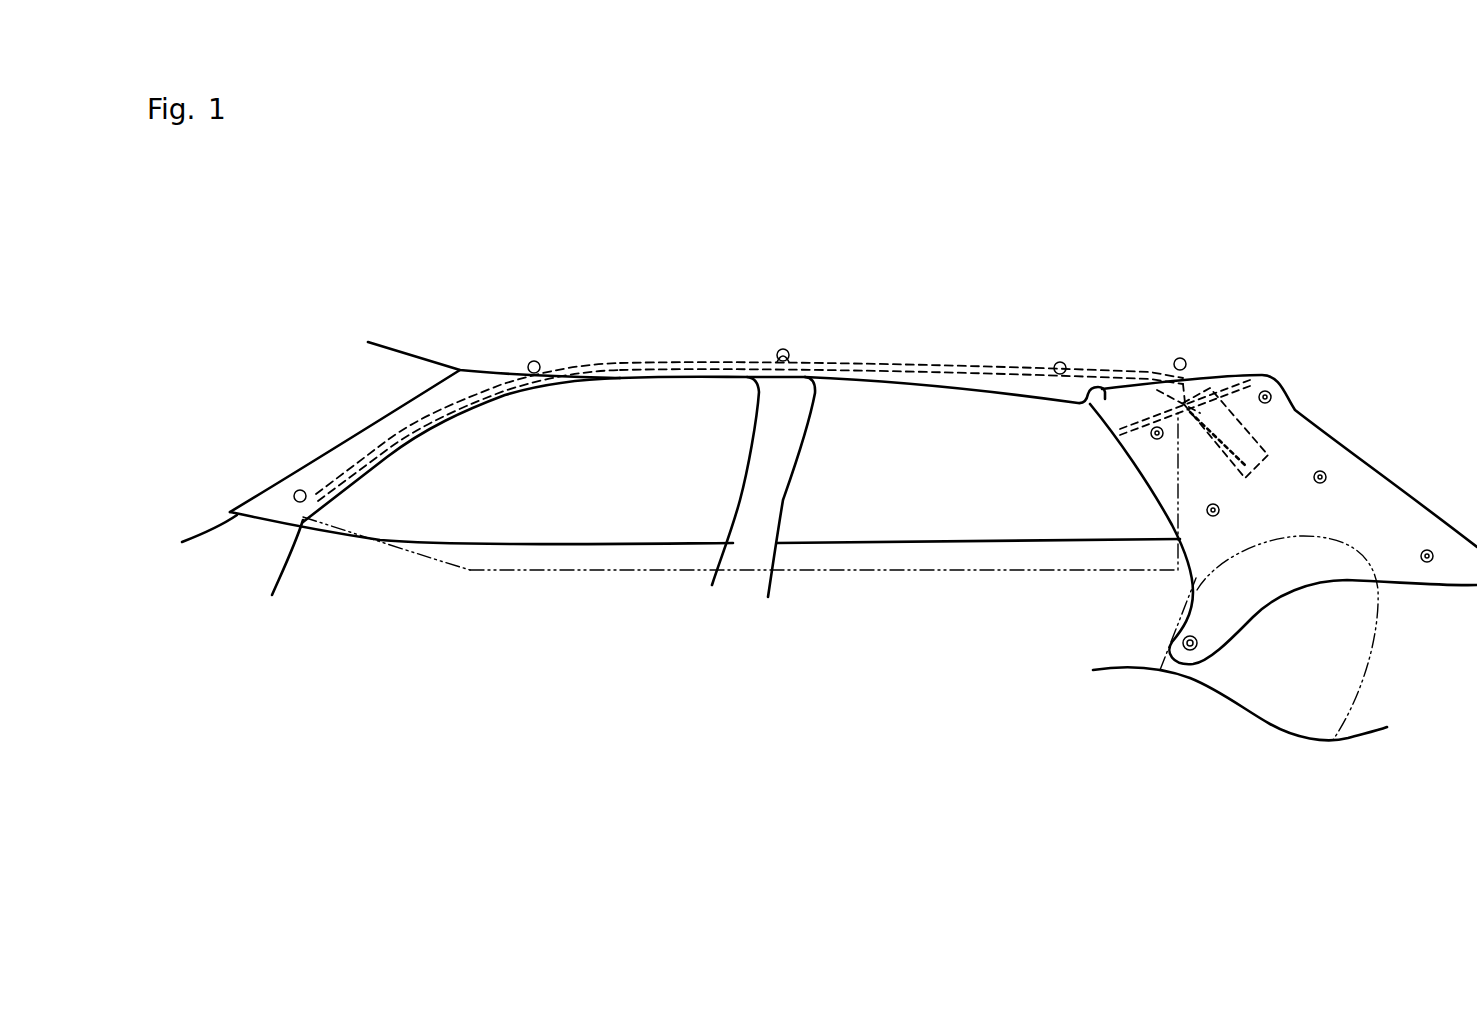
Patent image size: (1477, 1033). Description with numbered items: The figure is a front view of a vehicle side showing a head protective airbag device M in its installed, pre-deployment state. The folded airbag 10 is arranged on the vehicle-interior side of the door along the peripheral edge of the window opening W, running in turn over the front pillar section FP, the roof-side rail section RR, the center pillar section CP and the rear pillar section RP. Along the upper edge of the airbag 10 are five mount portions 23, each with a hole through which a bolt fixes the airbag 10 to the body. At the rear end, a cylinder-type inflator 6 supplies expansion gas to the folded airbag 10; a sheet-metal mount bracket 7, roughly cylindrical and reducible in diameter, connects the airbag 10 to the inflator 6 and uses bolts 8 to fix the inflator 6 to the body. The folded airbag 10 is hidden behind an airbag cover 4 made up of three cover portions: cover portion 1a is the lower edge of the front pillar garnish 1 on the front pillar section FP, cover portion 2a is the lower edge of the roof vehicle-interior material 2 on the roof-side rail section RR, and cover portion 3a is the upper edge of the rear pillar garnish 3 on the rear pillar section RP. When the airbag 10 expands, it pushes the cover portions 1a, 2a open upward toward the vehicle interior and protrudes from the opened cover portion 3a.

The front pillar garnish 1 is at (417, 410).
The roof vehicle-interior material 2 is at (698, 353).
The rear pillar garnish 3 is at (1268, 577).
The airbag cover 4 is at (304, 520).
The cover portion 1a is at (387, 457).
The cover portion 2a is at (677, 377).
The cover portion 3a is at (1103, 399).
The inflator 6 is at (1243, 457).
The mount bracket 7 is at (1243, 450).
The bolts 8 is at (1233, 410).
The airbag 10 is at (992, 366).
The mount portions 23 is at (790, 352).
The front pillar section FP is at (310, 415).
The roof-side rail section RR is at (890, 345).
The center pillar section CP is at (725, 500).
The rear pillar section RP is at (1133, 510).
The opening W is at (555, 530).
The head protective airbag device M is at (1225, 347).